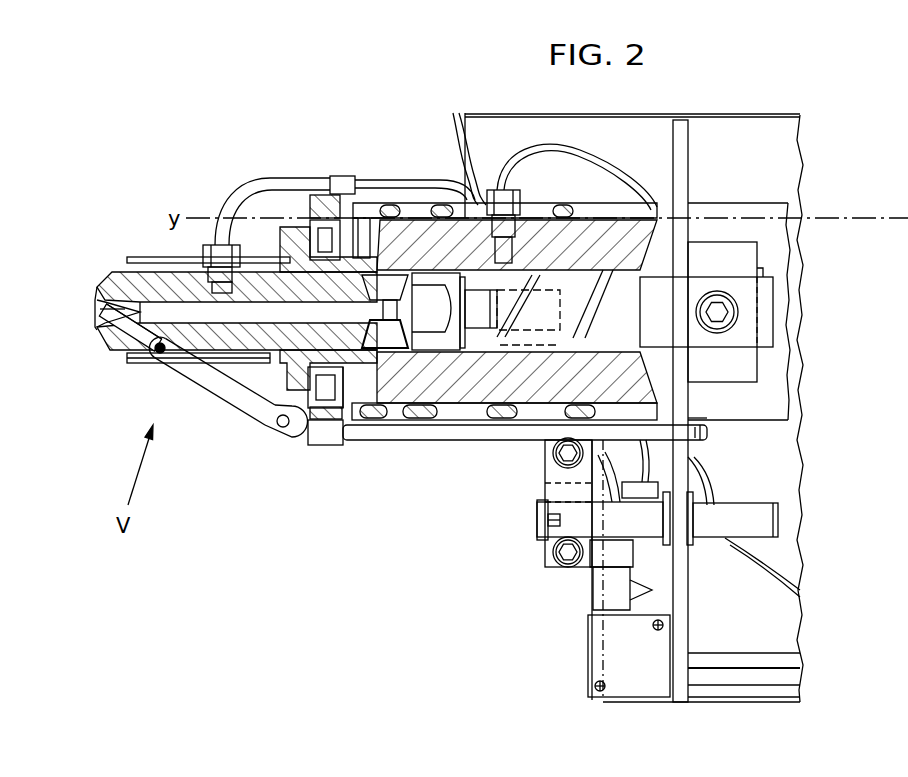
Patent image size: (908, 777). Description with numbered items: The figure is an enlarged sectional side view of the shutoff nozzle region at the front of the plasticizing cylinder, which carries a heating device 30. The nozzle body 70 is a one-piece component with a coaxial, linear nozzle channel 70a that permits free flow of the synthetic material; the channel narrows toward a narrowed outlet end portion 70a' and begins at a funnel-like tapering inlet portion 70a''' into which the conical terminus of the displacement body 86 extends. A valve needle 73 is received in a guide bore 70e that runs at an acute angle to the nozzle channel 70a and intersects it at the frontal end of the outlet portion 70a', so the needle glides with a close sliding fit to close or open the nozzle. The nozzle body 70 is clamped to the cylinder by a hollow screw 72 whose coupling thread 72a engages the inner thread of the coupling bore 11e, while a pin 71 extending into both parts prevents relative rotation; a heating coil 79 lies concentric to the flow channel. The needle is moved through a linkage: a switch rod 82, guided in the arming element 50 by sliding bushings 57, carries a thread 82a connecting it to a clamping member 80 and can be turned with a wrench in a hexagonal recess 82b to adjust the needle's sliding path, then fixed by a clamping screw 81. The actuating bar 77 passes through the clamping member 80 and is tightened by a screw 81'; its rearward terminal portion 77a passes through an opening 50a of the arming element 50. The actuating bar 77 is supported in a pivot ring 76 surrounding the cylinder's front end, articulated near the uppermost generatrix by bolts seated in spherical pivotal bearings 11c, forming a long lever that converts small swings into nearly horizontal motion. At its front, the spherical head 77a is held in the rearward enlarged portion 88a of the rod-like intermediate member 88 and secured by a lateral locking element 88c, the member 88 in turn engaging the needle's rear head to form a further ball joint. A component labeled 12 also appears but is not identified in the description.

The spherical pivotal bearings 11c is at (363, 243).
The coupling bore 11e is at (393, 270).
The mold 12 is at (625, 328).
The heating device 30 is at (620, 153).
The arming element 50 is at (720, 257).
The opening 50a is at (678, 420).
The sliding bushings 57 is at (693, 540).
The nozzle body 70 is at (107, 276).
The nozzle channel 70a is at (160, 381).
The narrowed outlet end portion 70a' is at (86, 279).
The funnel-like tapering inlet portion 70a''' is at (340, 433).
The guide bore 70e is at (108, 323).
The pin 71 is at (387, 272).
The hollow screw 72 is at (300, 214).
The coupling thread 72a is at (325, 447).
The valve needle 73 is at (137, 363).
The pivot ring 76 is at (323, 198).
The actuating bar 77 is at (438, 440).
The spherical head 77a is at (703, 433).
The heating coil 79 is at (128, 257).
The clamping member 80 is at (546, 470).
The clamping screw 81 is at (554, 585).
The screw 81' is at (526, 456).
The switch rod 82 is at (745, 520).
The thread 82a is at (542, 550).
The hexagonal recess 82b is at (533, 522).
The displacement body 86 is at (437, 318).
The intermediate member 88 is at (230, 397).
The rearward enlarged portion 88a is at (280, 437).
The lateral locking element 88c is at (287, 447).